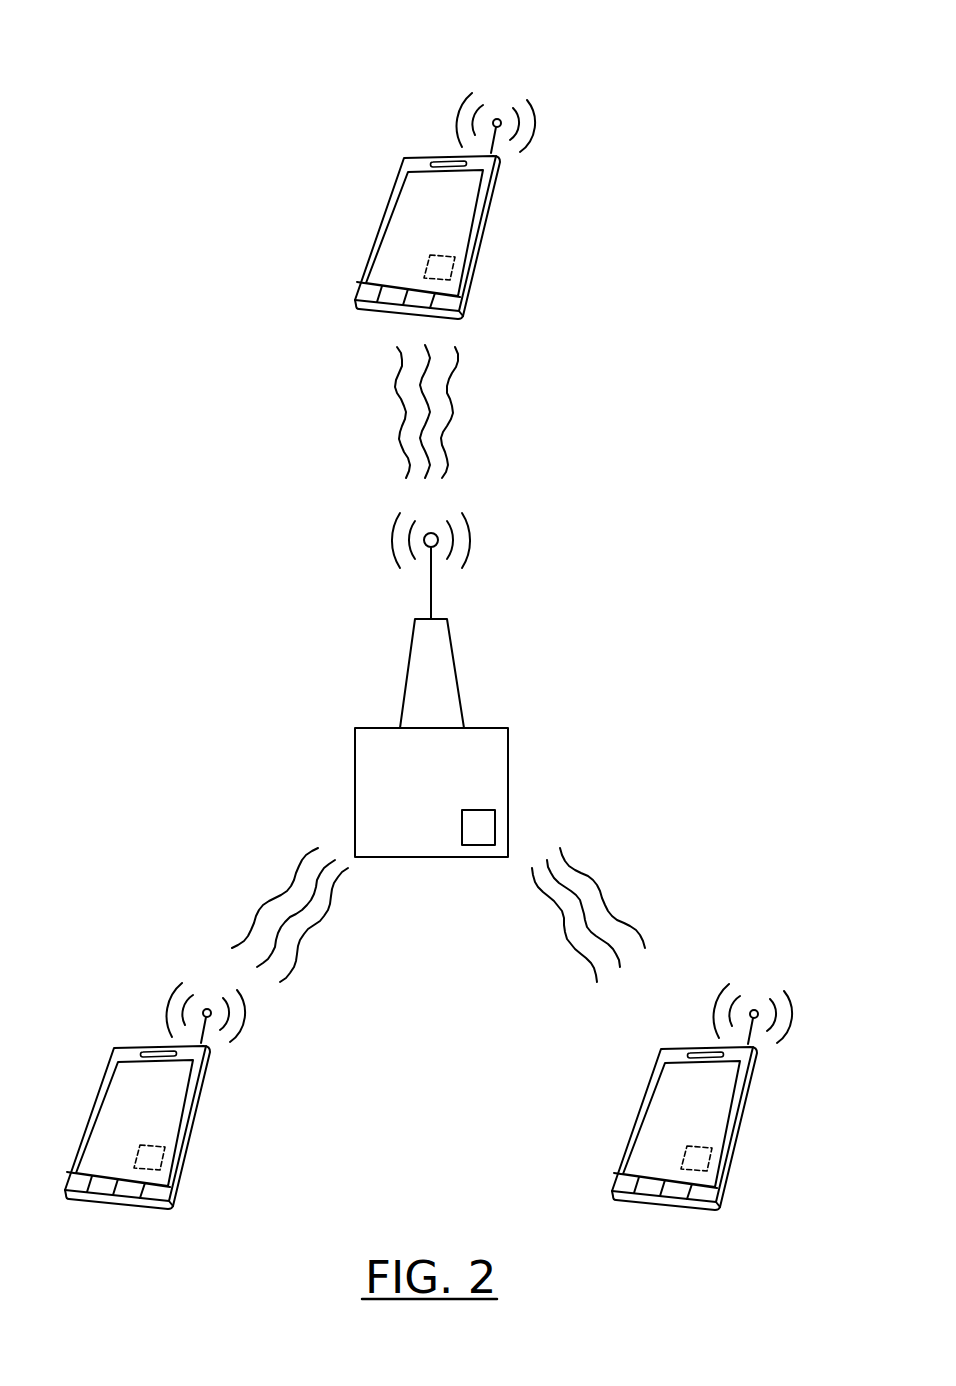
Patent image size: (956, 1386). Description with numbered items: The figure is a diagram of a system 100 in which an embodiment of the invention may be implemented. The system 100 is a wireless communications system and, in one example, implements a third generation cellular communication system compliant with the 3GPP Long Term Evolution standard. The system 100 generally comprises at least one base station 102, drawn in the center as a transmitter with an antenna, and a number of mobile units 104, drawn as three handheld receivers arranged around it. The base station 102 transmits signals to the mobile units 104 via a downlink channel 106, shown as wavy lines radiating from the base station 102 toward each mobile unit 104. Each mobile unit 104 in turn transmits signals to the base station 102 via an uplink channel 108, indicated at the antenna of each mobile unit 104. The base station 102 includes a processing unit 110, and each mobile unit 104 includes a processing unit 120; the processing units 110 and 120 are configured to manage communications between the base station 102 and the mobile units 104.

The system 100 is at (252, 35).
The base station 102 is at (378, 727).
The mobile unit 104 is at (423, 153).
The downlink channel 106 is at (398, 394).
The uplink channel 108 is at (534, 124).
The processing unit 110 is at (462, 833).
The processing unit 120 is at (447, 256).